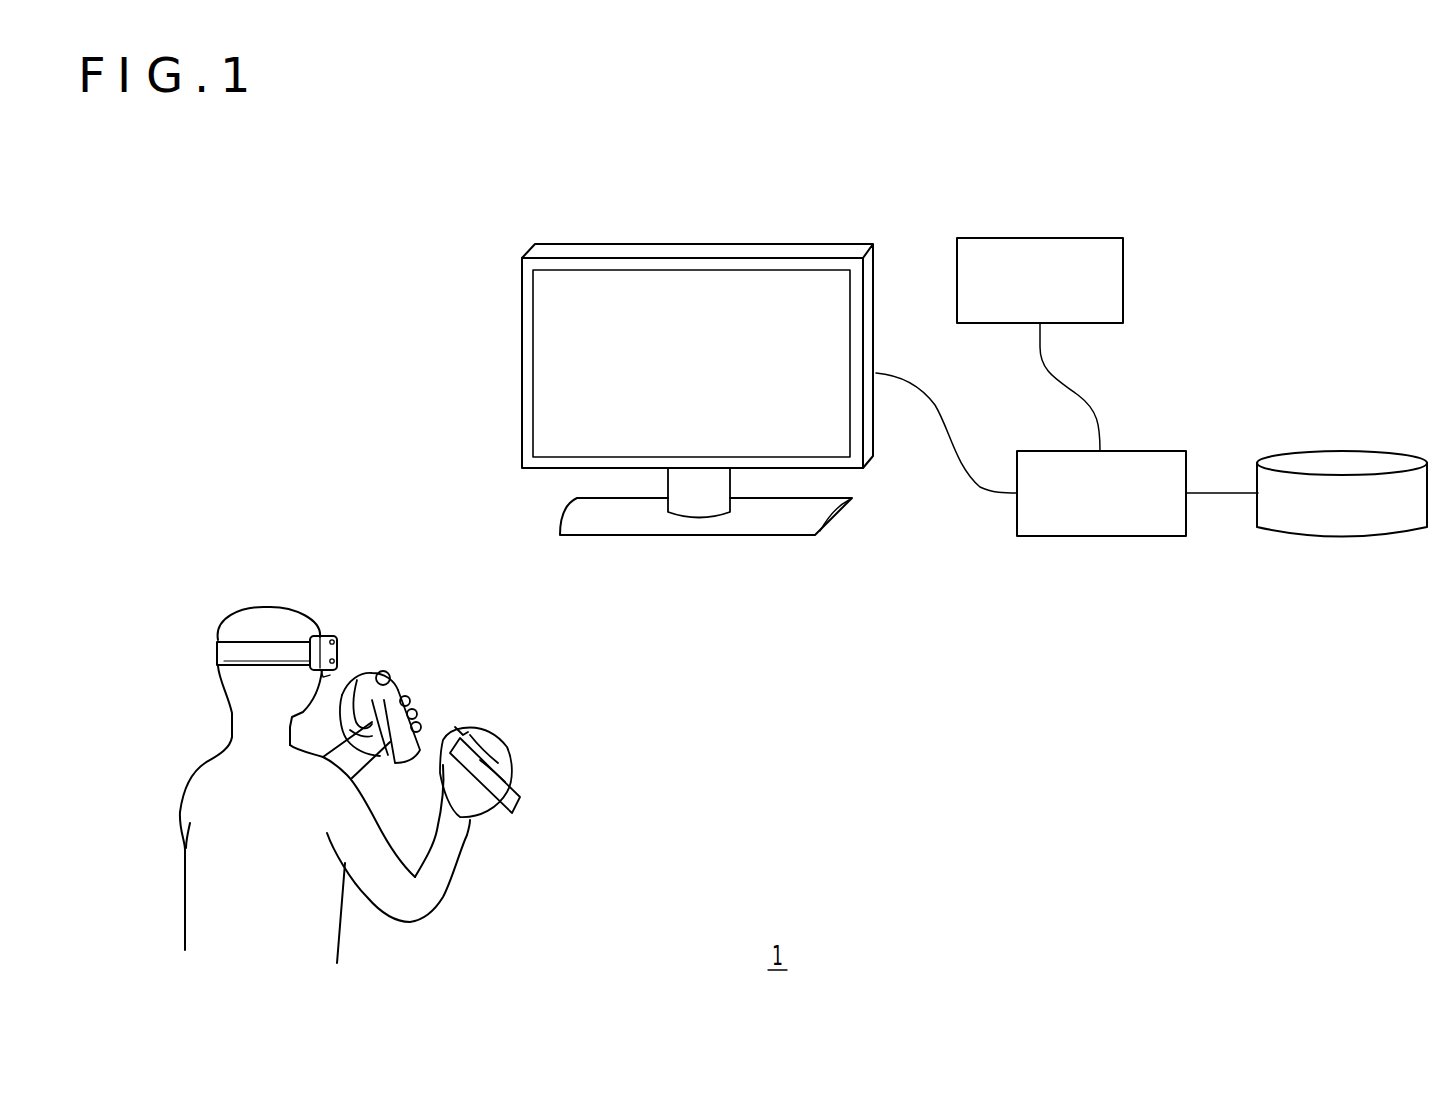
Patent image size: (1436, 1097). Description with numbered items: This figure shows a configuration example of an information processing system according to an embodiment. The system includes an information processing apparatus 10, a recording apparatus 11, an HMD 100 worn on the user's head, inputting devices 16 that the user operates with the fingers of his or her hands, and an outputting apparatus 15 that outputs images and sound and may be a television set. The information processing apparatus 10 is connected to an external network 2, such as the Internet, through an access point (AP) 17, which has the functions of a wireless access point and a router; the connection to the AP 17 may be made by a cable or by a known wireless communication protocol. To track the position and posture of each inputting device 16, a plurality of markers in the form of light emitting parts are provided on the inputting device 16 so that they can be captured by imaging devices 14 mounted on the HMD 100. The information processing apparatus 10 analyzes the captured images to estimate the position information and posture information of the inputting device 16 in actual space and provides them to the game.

The external network 2 is at (1040, 238).
The information processing apparatus 10 is at (1153, 450).
The recording apparatus 11 is at (1385, 462).
The imaging devices 14 is at (336, 640).
The outputting apparatus 15 is at (520, 372).
The inputting devices 16 is at (388, 668).
The access point (AP) 17 is at (1090, 237).
The HMD 100 is at (218, 647).